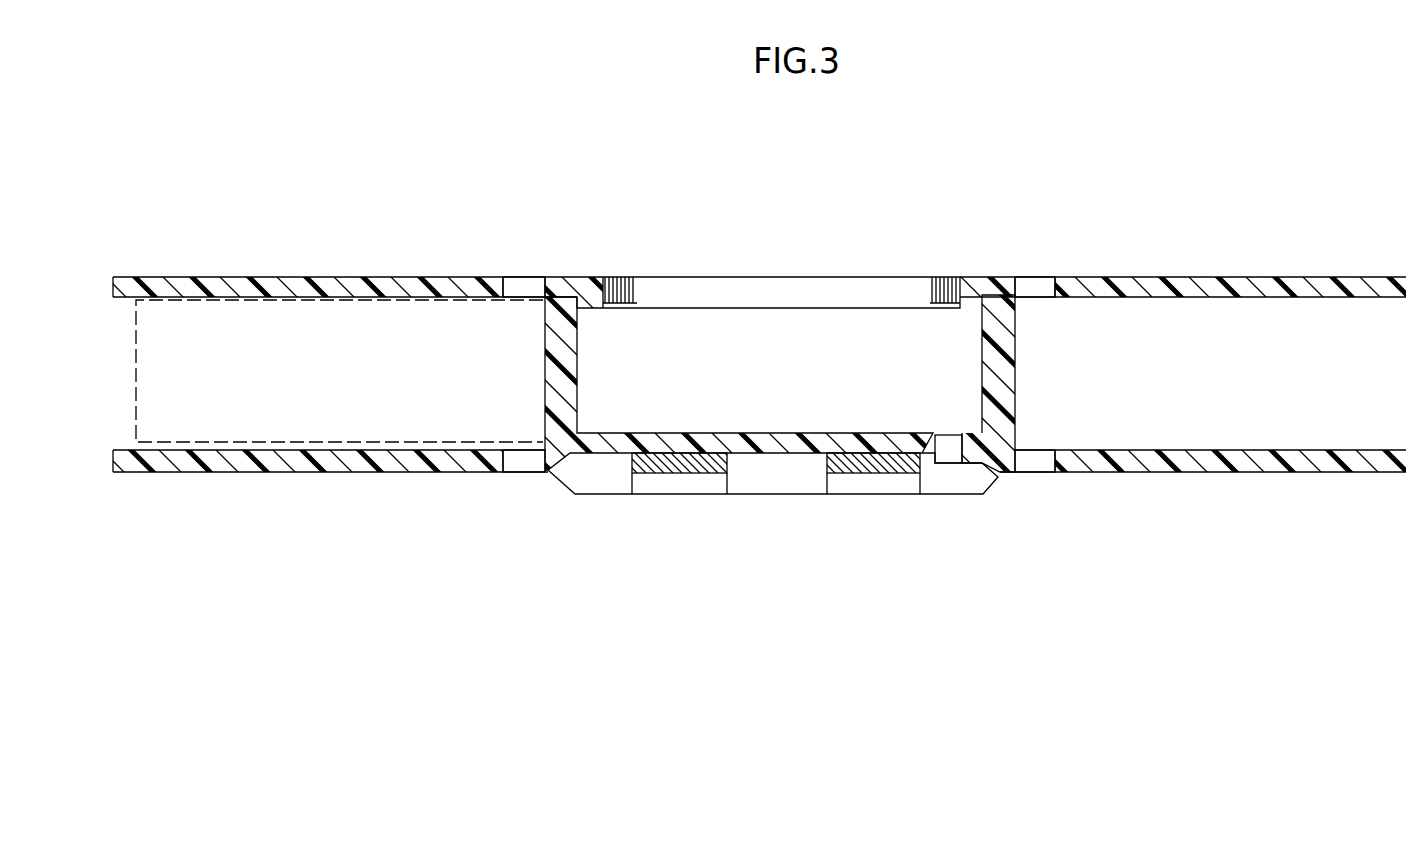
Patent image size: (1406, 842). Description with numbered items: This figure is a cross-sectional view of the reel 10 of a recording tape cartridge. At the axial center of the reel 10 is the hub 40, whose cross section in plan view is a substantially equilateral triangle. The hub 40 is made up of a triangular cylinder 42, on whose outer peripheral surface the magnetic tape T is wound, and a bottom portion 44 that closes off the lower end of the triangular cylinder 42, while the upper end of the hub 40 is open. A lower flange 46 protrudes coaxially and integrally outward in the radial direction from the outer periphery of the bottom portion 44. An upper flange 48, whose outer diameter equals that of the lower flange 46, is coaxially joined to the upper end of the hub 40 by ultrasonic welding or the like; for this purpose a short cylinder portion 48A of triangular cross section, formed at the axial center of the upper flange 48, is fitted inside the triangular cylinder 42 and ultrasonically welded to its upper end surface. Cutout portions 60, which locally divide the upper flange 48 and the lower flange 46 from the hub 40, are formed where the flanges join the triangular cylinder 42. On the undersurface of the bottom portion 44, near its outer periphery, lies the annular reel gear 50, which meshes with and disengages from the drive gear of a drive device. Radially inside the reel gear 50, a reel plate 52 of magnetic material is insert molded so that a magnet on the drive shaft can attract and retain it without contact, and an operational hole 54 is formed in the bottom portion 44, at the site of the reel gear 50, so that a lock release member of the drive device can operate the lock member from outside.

The reel 10 is at (1166, 141).
The hub 40 is at (740, 390).
The triangular cylinder 42 is at (1005, 380).
The bottom portion 44 is at (860, 438).
The lower flange 46 is at (1214, 470).
The upper flange 48 is at (1215, 282).
The short cylinder portion 48A is at (965, 300).
The reel gear 50 is at (957, 487).
The reel plate 52 is at (848, 474).
The operational hole 54 is at (960, 455).
The cutout portion 60 is at (505, 291).
The magnetic tape T is at (334, 430).